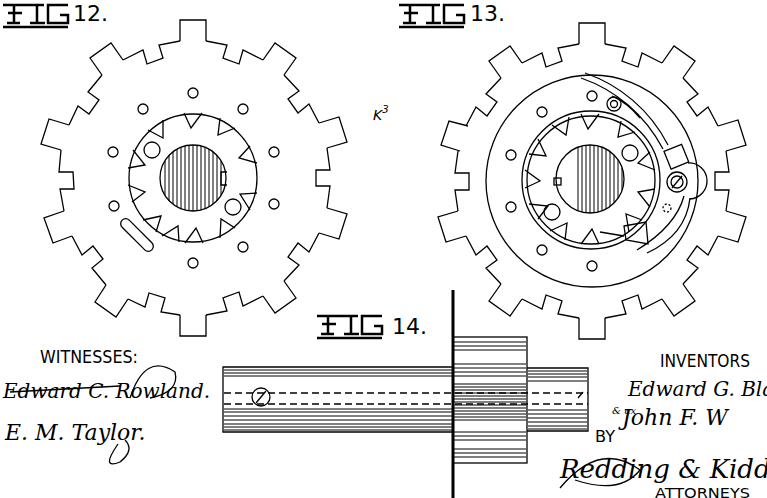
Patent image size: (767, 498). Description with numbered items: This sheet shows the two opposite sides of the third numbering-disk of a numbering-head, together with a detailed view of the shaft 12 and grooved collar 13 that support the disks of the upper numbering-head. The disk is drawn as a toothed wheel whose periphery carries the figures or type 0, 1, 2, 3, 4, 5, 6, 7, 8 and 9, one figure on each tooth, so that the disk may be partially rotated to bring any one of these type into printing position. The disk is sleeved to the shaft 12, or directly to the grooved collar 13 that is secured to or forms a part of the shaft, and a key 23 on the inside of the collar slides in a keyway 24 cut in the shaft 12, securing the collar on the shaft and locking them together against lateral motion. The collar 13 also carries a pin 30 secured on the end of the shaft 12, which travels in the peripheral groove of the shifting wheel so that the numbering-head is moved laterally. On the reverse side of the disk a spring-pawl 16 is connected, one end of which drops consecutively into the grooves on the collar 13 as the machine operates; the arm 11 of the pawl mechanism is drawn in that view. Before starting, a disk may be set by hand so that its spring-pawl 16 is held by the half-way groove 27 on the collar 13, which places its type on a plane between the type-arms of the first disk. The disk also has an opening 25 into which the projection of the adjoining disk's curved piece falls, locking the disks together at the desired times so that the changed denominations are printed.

In FIG. 13, the pawl lever 11 is at (644, 163).
In FIG. 12, the shaft 12 is at (193, 178).
In FIG. 13, the shaft 12 is at (590, 179).
In FIG. 14, the shaft 12 is at (370, 420).
In FIG. 12, the grooved collar 13 is at (192, 178).
In FIG. 13, the grooved collar 13 is at (591, 180).
In FIG. 14, the grooved collar 13 is at (528, 362).
In FIG. 13, the spring-pawl 16 is at (636, 233).
In FIG. 14, the key 23 is at (583, 392).
In FIG. 12, the keyway 24 is at (227, 178).
In FIG. 12, the opening 25 is at (138, 241).
In FIG. 13, the half-way groove 27 is at (613, 249).
In FIG. 14, the pin 30 is at (263, 406).
In FIG. 12, the figure or type "0" 0 is at (106, 59).
In FIG. 13, the figure or type "0" 0 is at (505, 62).
In FIG. 12, the figure or type "1" 1 is at (193, 30).
In FIG. 13, the figure or type "1" 1 is at (592, 33).
In FIG. 12, the figure or type "2" 2 is at (279, 59).
In FIG. 13, the figure or type "2" 2 is at (678, 62).
In FIG. 12, the figure or type "3" 3 is at (333, 132).
In FIG. 13, the figure or type "3" 3 is at (732, 135).
In FIG. 12, the figure or type "4" 4 is at (333, 223).
In FIG. 13, the figure or type "4" 4 is at (732, 226).
In FIG. 12, the figure or type "5" 5 is at (279, 297).
In FIG. 13, the figure or type "5" 5 is at (678, 300).
In FIG. 12, the figure or type "6" 6 is at (193, 325).
In FIG. 13, the figure or type "6" 6 is at (592, 328).
In FIG. 12, the figure or type "7" 7 is at (111, 301).
In FIG. 13, the figure or type "7" 7 is at (505, 300).
In FIG. 12, the figure or type "8" 8 is at (58, 227).
In FIG. 13, the figure or type "8" 8 is at (452, 226).
In FIG. 12, the figure or type "9" 9 is at (55, 134).
In FIG. 13, the figure or type "9" 9 is at (454, 136).